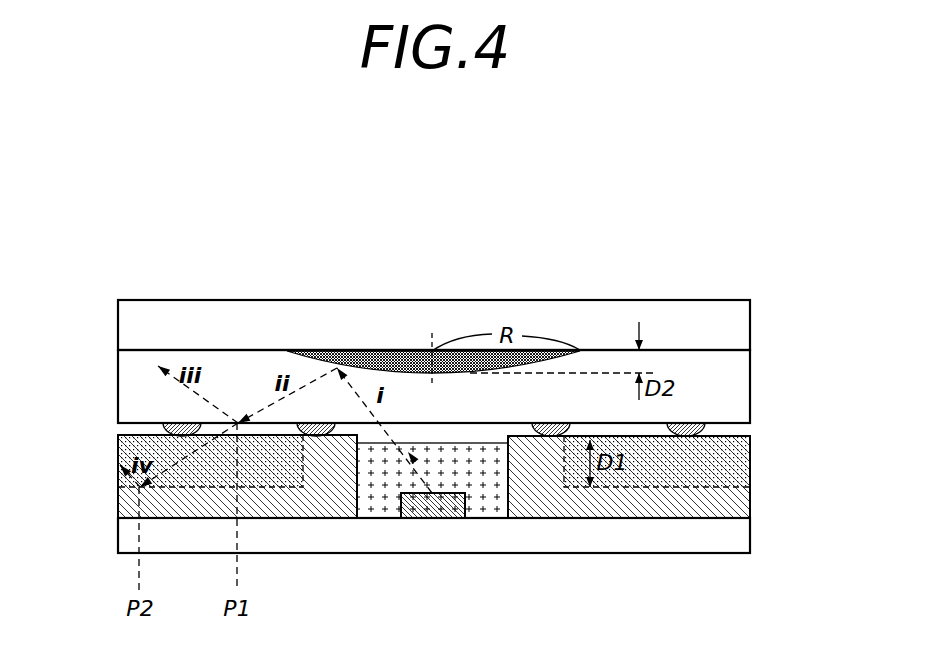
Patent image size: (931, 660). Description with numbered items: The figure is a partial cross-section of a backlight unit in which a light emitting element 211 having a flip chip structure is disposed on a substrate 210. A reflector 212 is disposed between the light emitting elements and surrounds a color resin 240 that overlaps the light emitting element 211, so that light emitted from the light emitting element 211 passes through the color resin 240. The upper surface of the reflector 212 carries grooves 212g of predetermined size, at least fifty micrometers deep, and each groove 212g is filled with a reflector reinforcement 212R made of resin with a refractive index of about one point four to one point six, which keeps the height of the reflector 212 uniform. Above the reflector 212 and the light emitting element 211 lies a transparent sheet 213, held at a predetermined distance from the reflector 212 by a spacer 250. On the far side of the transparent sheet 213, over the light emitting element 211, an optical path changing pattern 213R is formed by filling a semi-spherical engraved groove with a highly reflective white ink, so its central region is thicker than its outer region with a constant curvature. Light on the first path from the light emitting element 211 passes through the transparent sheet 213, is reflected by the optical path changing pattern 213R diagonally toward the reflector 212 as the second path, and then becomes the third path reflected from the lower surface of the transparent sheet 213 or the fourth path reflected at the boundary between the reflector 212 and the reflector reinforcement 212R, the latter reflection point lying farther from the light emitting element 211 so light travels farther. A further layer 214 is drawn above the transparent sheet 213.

The substrate 210 is at (738, 538).
The light emitting element 211 is at (447, 508).
The reflector 212 is at (132, 500).
The reflector reinforcement 212R is at (130, 452).
The groove 212g is at (283, 502).
The transparent sheet 213 is at (738, 395).
The optical path changing pattern 213R is at (373, 357).
The encapsulation layer 214 is at (738, 327).
The color resin 240 is at (375, 508).
The spacer 250 is at (553, 423).